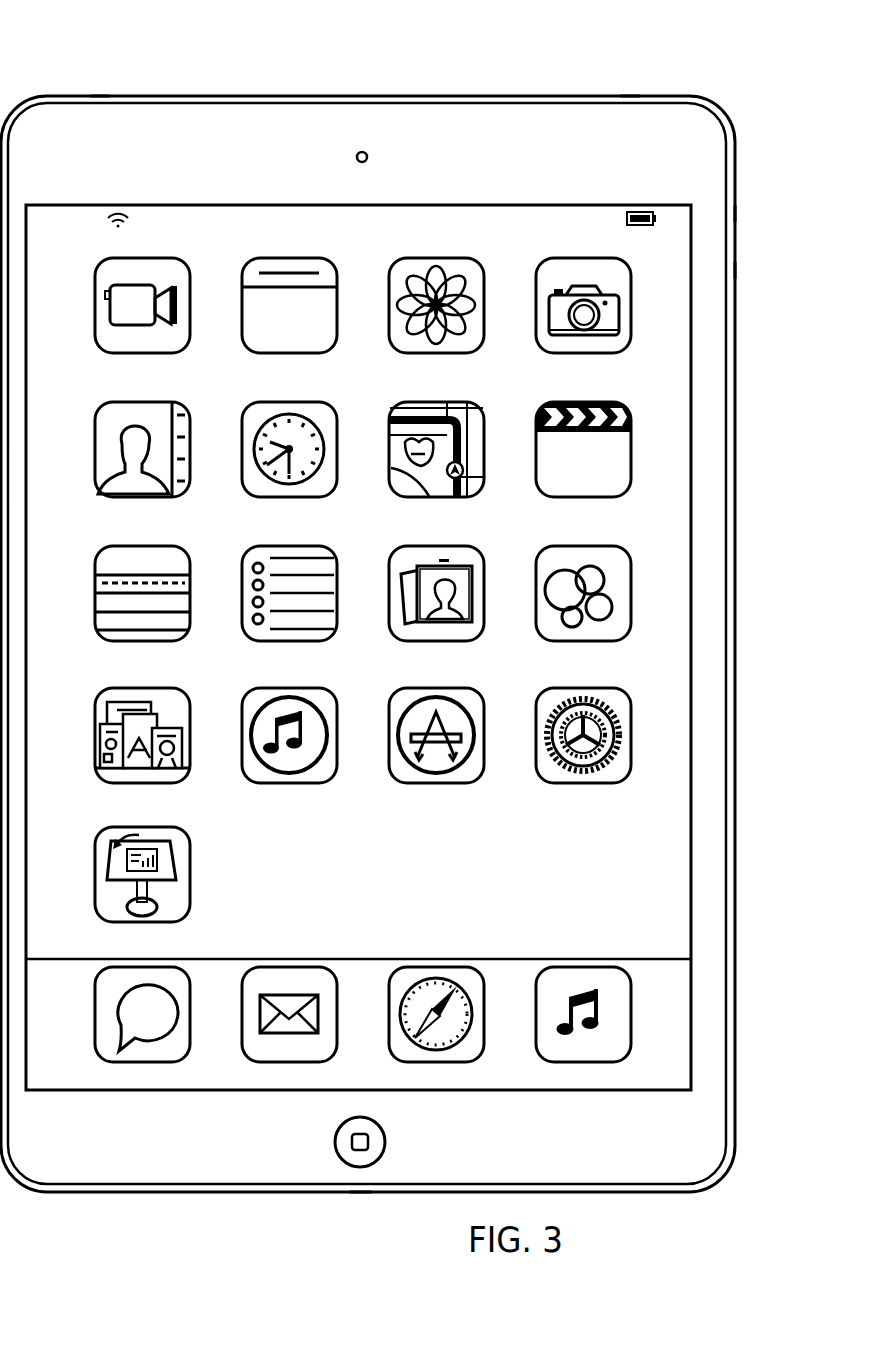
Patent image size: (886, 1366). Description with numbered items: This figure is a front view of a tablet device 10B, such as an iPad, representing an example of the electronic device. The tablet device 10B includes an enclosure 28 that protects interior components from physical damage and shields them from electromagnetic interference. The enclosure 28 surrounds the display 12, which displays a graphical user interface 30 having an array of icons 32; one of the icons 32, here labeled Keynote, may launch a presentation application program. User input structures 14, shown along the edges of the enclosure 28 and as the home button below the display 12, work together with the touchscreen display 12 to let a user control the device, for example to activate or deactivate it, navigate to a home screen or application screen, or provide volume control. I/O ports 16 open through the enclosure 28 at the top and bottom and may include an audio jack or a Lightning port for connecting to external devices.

The tablet device 10B is at (112, 26).
The display 12 is at (691, 857).
The user input structures 14 is at (628, 97).
The I/O ports 16 is at (98, 97).
The enclosure 28 is at (735, 606).
The graphical user interface 30 is at (660, 808).
The icons 32 is at (190, 874).